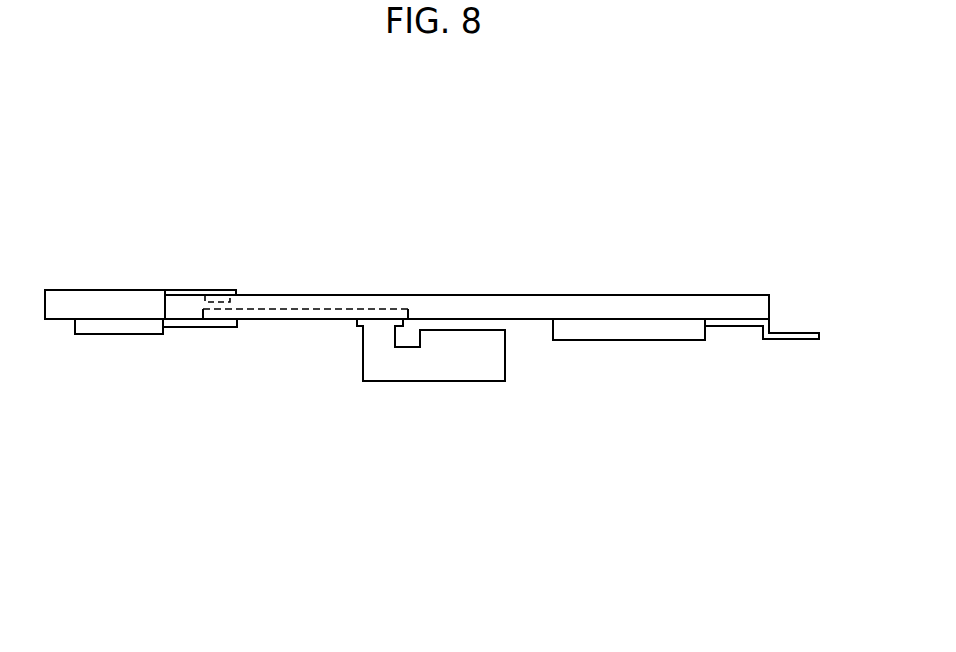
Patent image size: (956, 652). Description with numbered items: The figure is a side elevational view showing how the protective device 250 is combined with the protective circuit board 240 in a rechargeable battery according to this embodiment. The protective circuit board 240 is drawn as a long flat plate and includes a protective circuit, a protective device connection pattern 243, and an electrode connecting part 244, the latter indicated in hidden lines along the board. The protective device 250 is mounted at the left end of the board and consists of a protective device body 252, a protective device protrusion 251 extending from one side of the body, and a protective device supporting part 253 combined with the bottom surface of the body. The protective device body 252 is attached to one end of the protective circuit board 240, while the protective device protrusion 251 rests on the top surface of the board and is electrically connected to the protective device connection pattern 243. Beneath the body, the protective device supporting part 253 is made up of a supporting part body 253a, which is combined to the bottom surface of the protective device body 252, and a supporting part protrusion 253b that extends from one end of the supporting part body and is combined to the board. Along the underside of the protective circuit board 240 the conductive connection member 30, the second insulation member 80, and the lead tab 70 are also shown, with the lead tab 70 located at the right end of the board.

The protective device 250 is at (165, 312).
The protective device protrusion 251 is at (210, 295).
The protective device body 252 is at (107, 290).
The protective device supporting part 253 is at (156, 379).
The supporting part body 253a is at (115, 334).
The supporting part protrusion 253b is at (212, 328).
The protective device connection pattern 243 is at (228, 293).
The electrode connecting part 244 is at (292, 311).
The protective circuit board 240 is at (467, 311).
The conductive connection member 30 is at (440, 381).
The second insulation member 80 is at (627, 340).
The lead tab 70 is at (771, 340).